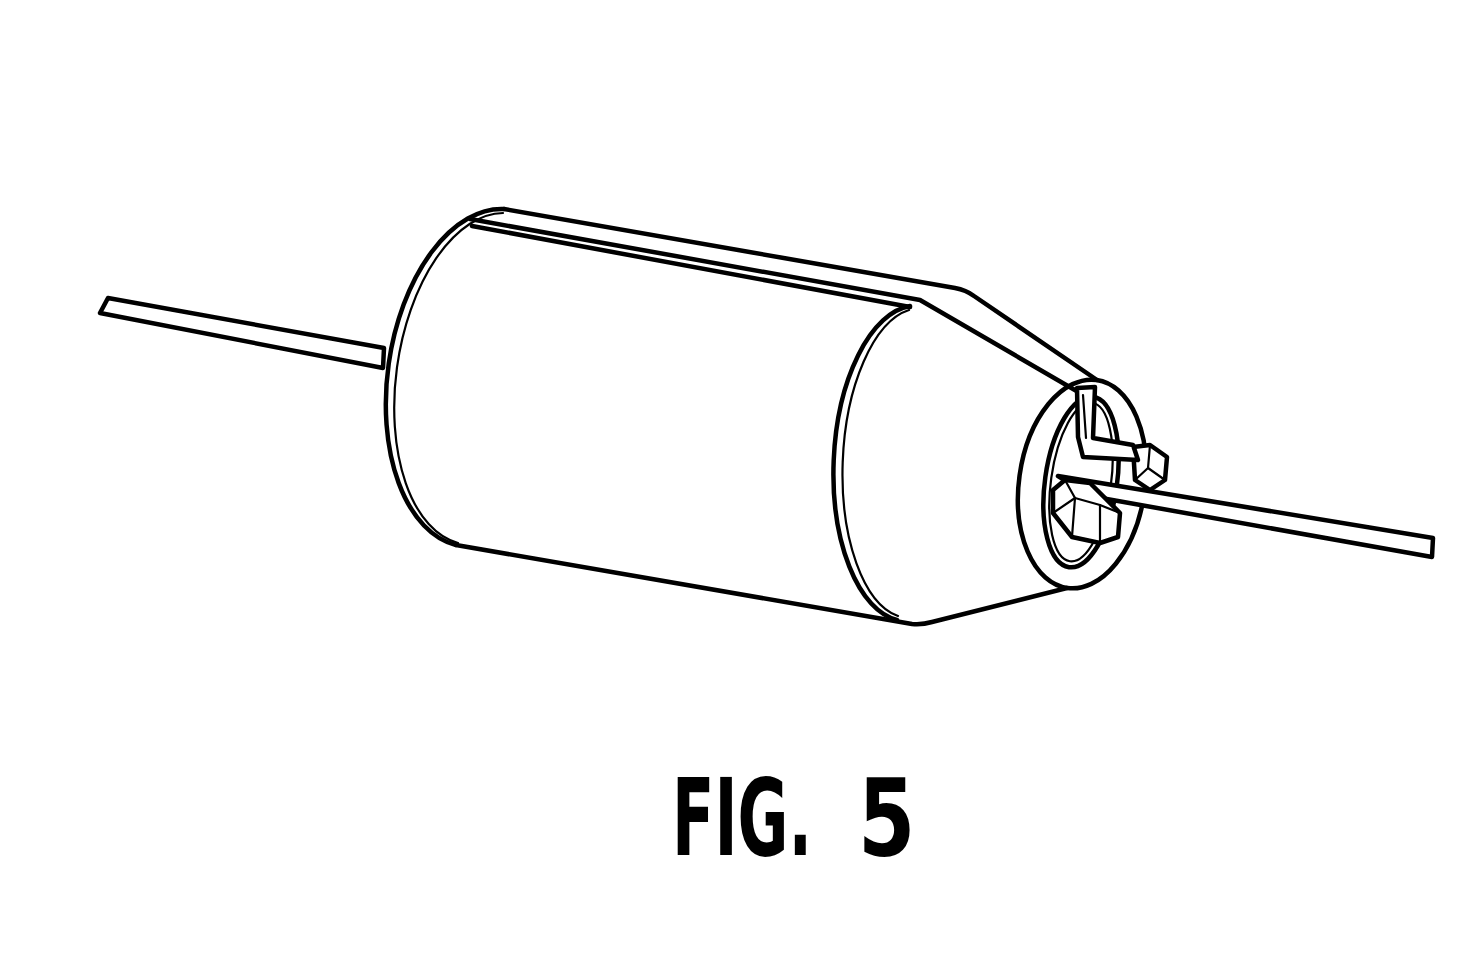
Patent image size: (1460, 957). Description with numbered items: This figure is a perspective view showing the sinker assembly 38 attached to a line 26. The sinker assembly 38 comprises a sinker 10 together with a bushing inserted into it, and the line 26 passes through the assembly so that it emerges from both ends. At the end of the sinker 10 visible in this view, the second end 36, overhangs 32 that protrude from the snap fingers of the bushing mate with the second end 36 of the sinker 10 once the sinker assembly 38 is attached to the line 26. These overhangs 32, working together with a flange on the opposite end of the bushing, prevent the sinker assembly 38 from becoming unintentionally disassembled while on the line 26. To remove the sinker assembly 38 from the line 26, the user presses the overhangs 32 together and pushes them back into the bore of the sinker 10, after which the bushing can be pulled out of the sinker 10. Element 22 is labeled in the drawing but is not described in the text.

The sinker 10 is at (751, 434).
The terminal tab 22 is at (1167, 373).
The line 26 is at (242, 258).
The overhangs 32 is at (1232, 571).
The second end 36 is at (1213, 460).
The sinker assembly 38 is at (766, 382).